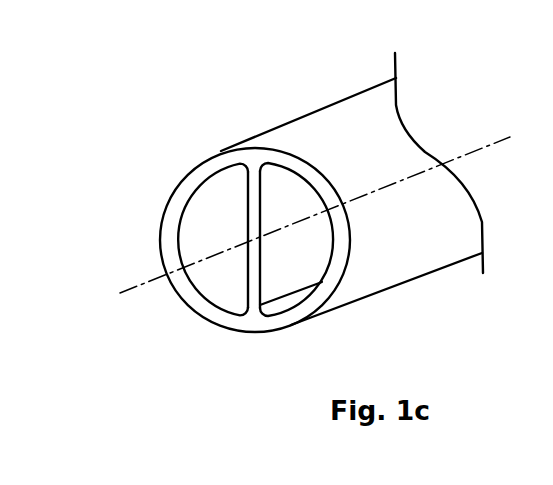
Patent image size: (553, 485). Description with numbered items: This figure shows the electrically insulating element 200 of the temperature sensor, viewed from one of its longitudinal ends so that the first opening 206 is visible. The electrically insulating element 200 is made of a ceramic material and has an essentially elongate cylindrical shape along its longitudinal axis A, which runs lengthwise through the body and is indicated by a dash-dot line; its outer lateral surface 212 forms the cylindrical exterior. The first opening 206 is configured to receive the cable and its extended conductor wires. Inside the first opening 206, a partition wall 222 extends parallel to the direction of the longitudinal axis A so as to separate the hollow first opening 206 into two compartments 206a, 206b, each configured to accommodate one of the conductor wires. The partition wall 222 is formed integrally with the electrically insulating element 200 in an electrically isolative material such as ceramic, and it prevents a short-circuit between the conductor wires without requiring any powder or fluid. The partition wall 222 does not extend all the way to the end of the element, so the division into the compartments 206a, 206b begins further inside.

The electrically insulating element 200 is at (321, 177).
The lateral surface 212 is at (373, 105).
The partition wall 222 is at (272, 220).
The first opening 206 is at (194, 280).
The compartment 206a is at (210, 240).
The compartment 206b is at (293, 282).
The longitudinal axis A is at (490, 140).